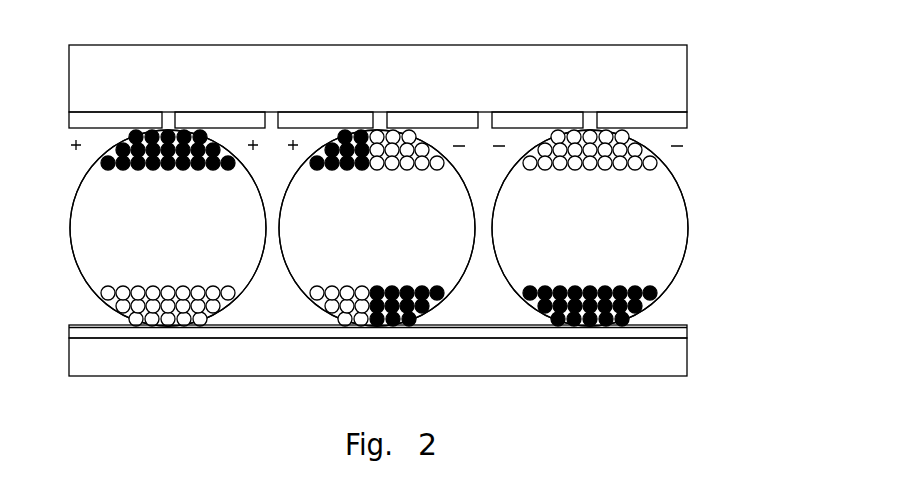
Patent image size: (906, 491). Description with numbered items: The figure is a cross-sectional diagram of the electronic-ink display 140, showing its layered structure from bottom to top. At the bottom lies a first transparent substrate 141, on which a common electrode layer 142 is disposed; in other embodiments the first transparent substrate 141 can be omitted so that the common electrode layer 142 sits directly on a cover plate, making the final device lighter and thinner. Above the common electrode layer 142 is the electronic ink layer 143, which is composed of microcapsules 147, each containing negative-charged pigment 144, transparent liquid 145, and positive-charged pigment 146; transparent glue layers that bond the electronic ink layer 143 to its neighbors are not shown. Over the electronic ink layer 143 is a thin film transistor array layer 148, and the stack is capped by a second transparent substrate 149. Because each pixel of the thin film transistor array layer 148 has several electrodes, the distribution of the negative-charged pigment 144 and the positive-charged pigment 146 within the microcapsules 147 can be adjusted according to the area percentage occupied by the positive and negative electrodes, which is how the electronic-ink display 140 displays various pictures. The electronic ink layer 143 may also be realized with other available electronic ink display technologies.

The electronic-ink display 140 is at (758, 33).
The first transparent substrate 141 is at (680, 360).
The common electrode layer 142 is at (680, 330).
The electronic ink layer 143 is at (762, 163).
The negative-charged pigment 144 is at (635, 288).
The transparent liquid 145 is at (673, 252).
The positive-charged pigment 146 is at (632, 162).
The microcapsule 147 is at (682, 196).
The thin film transistor array layer 148 is at (679, 122).
The second transparent substrate 149 is at (678, 95).